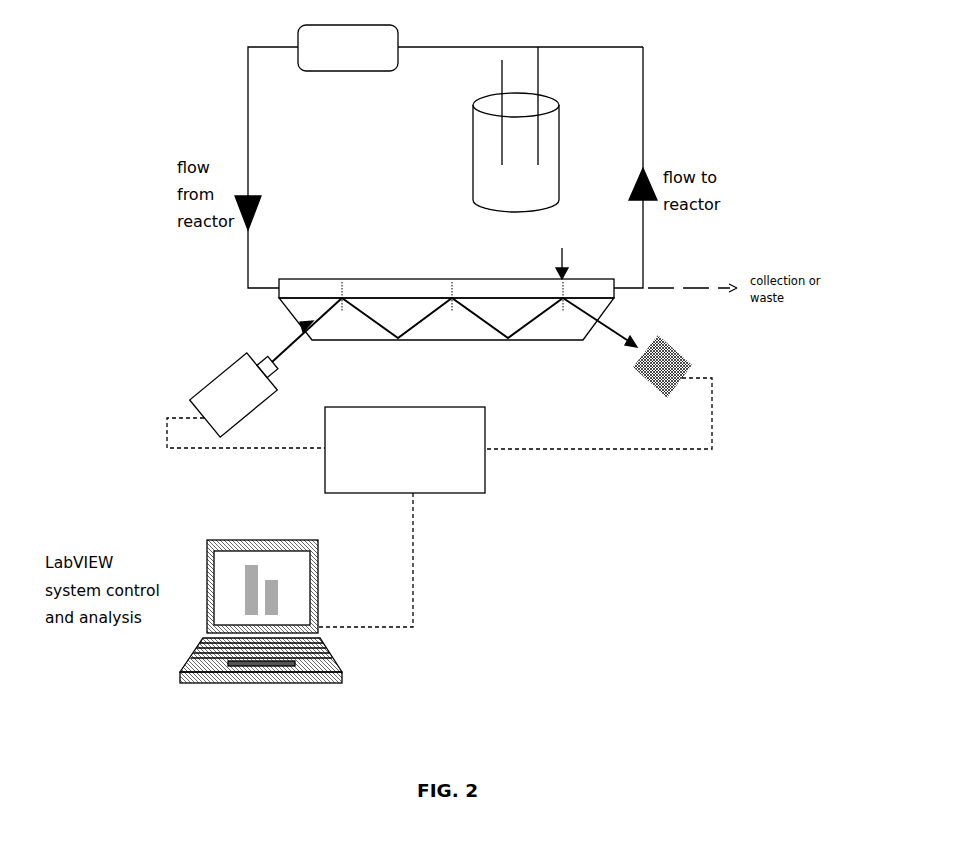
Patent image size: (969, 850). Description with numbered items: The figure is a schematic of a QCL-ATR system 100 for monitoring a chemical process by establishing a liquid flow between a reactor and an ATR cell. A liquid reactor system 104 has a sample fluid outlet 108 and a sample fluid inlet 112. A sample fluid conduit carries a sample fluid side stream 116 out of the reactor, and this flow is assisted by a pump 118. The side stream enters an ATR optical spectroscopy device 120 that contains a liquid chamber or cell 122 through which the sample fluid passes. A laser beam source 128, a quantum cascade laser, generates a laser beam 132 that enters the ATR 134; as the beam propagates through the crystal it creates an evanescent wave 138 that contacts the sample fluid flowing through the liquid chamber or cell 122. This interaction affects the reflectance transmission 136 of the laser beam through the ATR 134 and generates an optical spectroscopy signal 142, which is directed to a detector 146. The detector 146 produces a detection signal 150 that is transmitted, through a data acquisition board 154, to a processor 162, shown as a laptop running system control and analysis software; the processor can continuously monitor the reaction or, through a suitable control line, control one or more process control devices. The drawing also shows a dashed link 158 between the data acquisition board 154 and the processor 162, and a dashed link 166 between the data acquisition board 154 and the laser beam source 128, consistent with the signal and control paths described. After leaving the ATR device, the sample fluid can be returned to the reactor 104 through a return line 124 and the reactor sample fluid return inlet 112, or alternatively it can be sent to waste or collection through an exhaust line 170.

The system 100 is at (727, 75).
The liquid reactor system 104 is at (562, 122).
The sample fluid outlet 108 is at (502, 140).
The sample fluid inlet 112 is at (540, 147).
The sample fluid side stream 116 is at (248, 90).
The pump 118 is at (343, 26).
The ATR optical spectroscopy device 120 is at (387, 278).
The liquid chamber or cell 122 is at (308, 288).
The return line 124 is at (648, 235).
The laser beam source 128 is at (217, 378).
The laser beam 132 is at (287, 343).
The ATR 134 is at (357, 328).
The reflectance transmission 136 is at (493, 330).
The evanescent wave 138 is at (563, 297).
The optical spectroscopy signal 142 is at (612, 300).
The detector 146 is at (675, 347).
The detection signal 150 is at (715, 420).
The data acquisition board 154 is at (485, 467).
The data line to laptop 158 is at (413, 577).
The processor 162 is at (345, 672).
The laser control line 166 is at (240, 450).
The exhaust line 170 is at (657, 288).